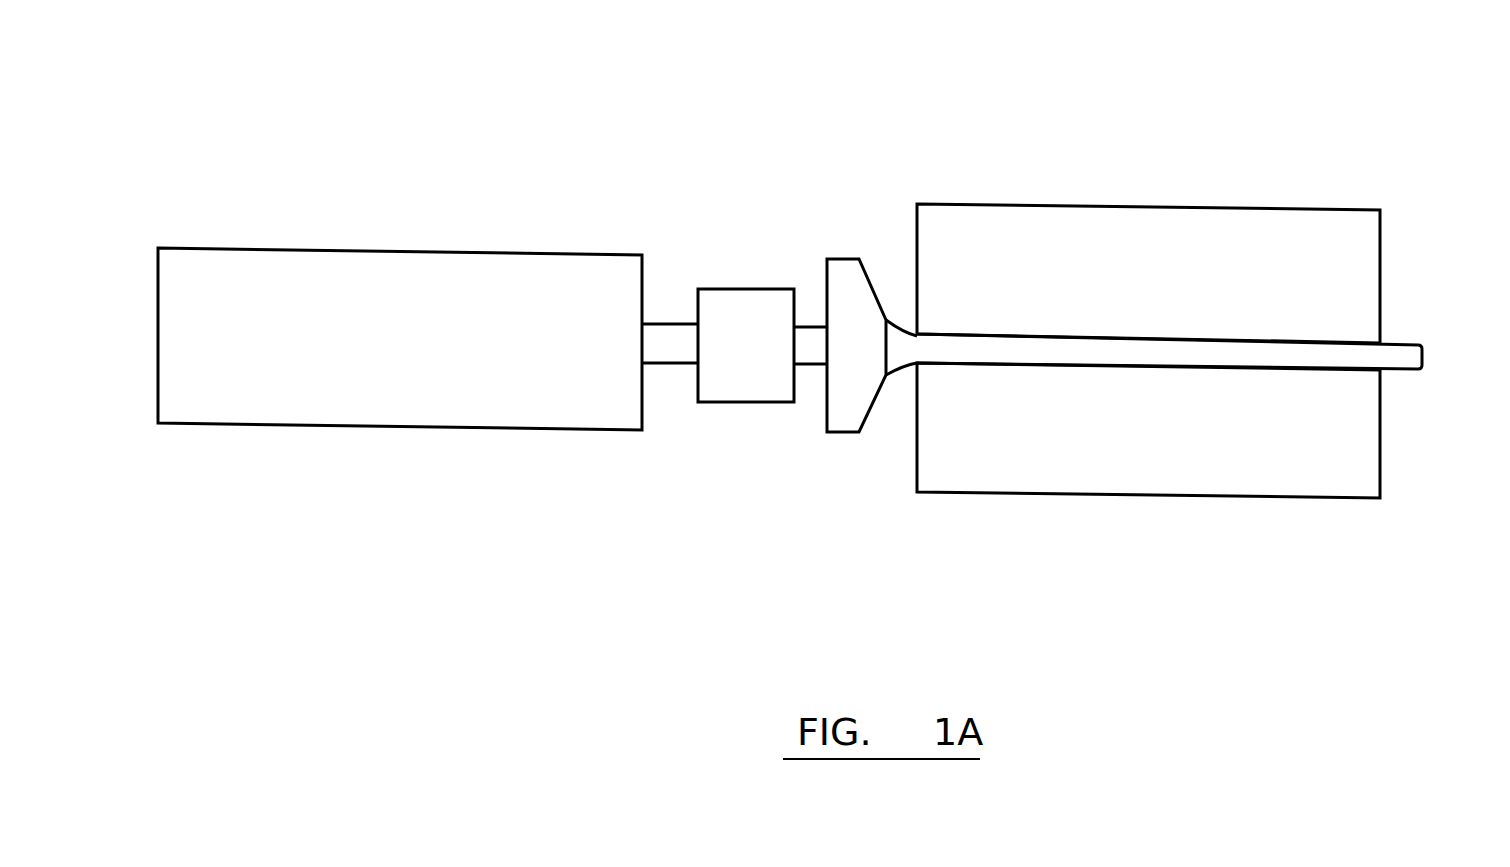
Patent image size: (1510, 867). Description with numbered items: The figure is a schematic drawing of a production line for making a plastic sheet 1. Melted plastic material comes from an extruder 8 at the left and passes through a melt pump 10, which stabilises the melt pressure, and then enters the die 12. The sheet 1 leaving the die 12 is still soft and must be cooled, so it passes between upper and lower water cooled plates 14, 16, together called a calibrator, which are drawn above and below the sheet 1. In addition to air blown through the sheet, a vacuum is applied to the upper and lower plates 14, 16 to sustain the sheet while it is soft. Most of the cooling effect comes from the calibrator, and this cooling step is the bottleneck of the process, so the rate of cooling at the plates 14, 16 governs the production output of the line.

The sheet 1 is at (1409, 352).
The extruder 8 is at (400, 362).
The melt pump 10 is at (746, 353).
The die 12 is at (854, 382).
The upper water cooled plate 14 is at (1227, 253).
The lower water cooled plate 16 is at (1227, 435).